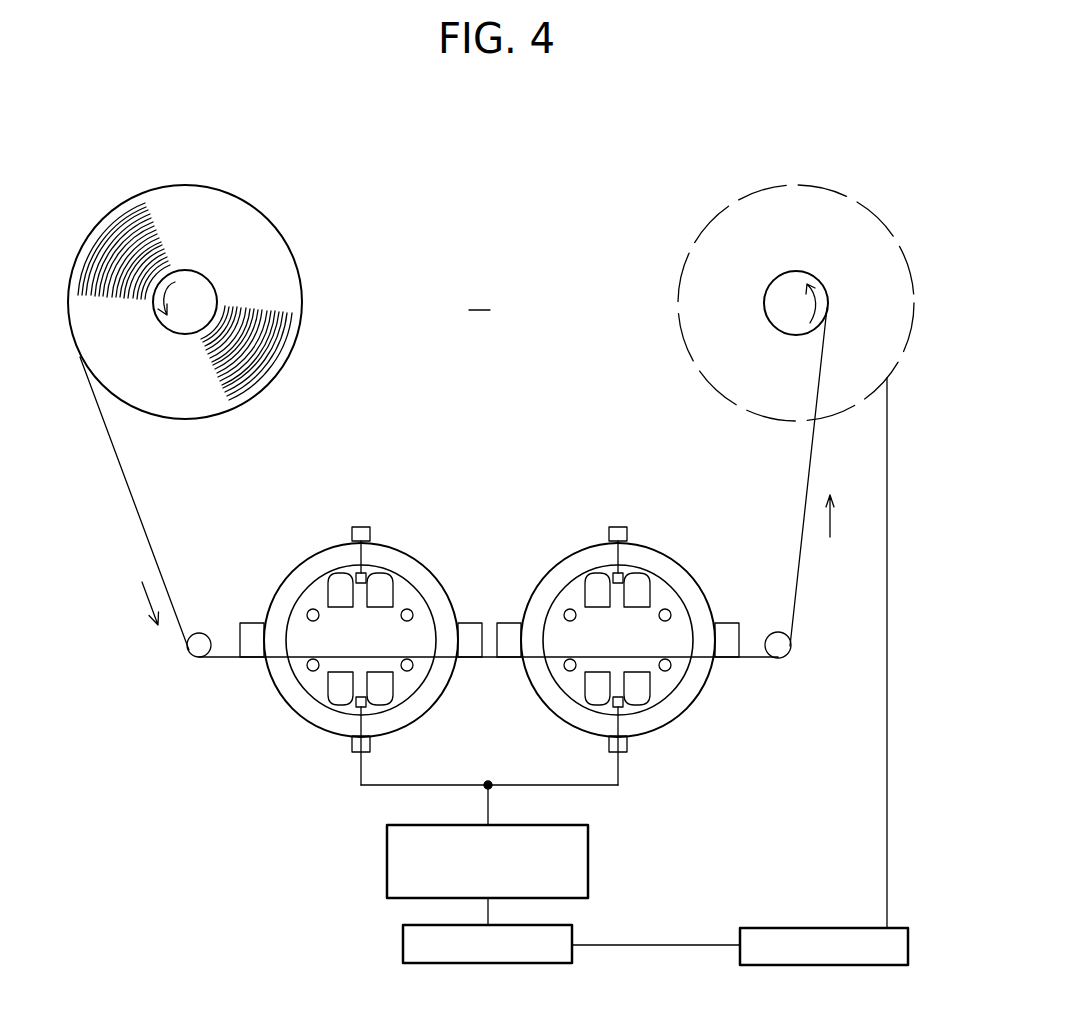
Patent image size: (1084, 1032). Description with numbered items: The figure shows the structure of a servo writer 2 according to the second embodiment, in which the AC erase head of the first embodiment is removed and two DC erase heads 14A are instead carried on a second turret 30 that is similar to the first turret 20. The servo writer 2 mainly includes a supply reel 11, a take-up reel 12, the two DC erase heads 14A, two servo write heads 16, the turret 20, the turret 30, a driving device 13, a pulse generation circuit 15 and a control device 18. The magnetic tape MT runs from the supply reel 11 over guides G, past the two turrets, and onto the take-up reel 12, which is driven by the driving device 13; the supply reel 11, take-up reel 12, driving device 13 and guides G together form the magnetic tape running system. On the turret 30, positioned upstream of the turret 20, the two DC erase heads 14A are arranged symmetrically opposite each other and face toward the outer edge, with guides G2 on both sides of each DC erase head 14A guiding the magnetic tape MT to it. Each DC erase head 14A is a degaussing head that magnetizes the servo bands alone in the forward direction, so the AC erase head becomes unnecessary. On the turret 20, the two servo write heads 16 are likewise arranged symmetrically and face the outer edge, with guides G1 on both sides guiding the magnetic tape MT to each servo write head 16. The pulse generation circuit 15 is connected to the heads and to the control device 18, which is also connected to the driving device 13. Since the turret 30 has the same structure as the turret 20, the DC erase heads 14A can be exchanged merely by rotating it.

The servo writer 2 is at (690, 92).
The supply reel 11 is at (240, 197).
The take-up reel 12 is at (852, 200).
The driving device 13 is at (885, 967).
The DC erase head 14A is at (364, 577).
The pulse generation circuit 15 is at (590, 862).
The servo write head 16 is at (620, 577).
The control device 18 is at (545, 966).
The turret 20 is at (724, 559).
The second turret 30 is at (414, 521).
The magnetic tape MT is at (131, 494).
The guide G is at (194, 655).
The guide G1 is at (570, 610).
The guide G2 is at (409, 661).